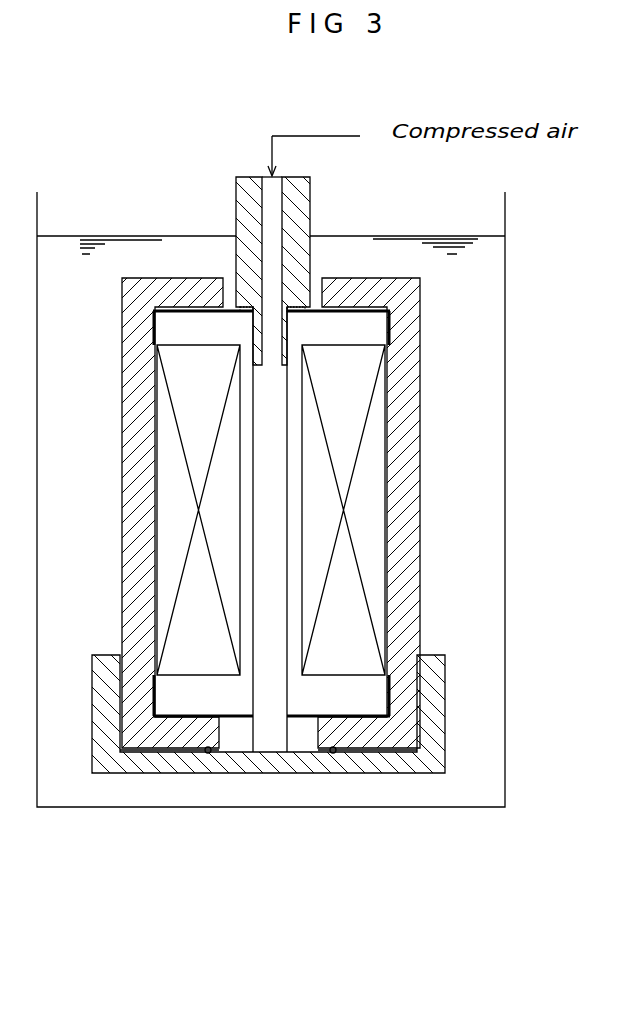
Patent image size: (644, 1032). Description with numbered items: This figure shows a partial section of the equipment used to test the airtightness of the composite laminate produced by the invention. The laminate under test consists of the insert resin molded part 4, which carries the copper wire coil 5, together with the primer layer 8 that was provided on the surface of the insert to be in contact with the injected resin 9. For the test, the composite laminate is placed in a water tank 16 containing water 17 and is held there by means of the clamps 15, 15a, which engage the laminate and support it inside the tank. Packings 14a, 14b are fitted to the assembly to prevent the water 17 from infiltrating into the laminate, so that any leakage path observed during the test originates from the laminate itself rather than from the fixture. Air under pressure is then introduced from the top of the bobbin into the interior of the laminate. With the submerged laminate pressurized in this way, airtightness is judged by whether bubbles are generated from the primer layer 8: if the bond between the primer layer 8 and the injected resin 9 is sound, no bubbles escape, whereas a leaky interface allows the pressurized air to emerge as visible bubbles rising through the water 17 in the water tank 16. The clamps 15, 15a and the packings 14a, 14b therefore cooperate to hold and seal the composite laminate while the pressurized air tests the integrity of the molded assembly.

The insert resin molded part 4 is at (378, 695).
The copper wire coil 5 is at (377, 465).
The primer layer 8 is at (152, 753).
The injected resin 9 is at (365, 762).
The packing 14a is at (240, 300).
The packing 14b is at (208, 753).
The clamp 15 is at (305, 763).
The clamp 15a is at (236, 197).
The water tank 16 is at (505, 563).
The liquid 17 is at (487, 322).